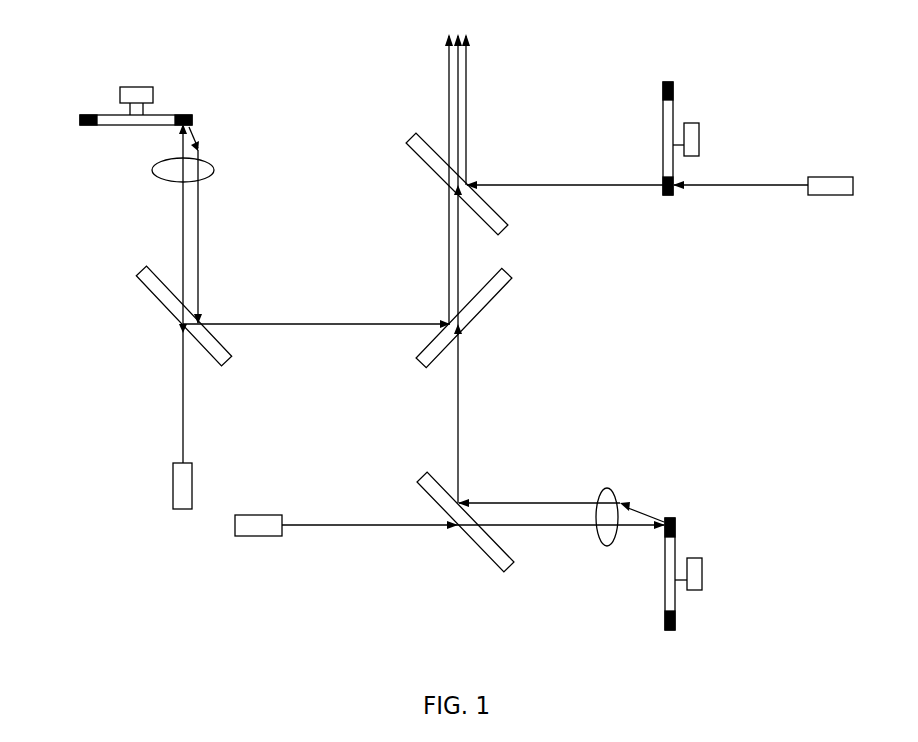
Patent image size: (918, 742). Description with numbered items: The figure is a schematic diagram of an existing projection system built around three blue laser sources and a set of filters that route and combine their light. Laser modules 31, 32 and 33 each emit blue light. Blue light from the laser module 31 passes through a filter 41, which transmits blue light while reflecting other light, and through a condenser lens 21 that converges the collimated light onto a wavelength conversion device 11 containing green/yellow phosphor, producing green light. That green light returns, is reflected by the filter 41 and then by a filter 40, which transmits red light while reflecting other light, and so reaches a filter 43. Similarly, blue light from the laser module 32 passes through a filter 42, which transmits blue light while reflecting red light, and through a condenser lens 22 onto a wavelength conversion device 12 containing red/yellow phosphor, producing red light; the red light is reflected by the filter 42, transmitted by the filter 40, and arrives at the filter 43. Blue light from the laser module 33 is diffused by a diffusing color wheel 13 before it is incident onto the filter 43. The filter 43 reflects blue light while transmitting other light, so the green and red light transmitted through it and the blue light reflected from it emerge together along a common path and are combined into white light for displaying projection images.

The wavelength conversion device 11 is at (90, 124).
The wavelength conversion device 12 is at (665, 628).
The diffusing color wheel 13 is at (672, 82).
The condenser lens 21 is at (160, 173).
The condenser lens 22 is at (612, 540).
The laser module 31 is at (178, 482).
The laser module 32 is at (252, 527).
The laser module 33 is at (822, 177).
The filter 40 is at (502, 282).
The filter 41 is at (150, 285).
The filter 42 is at (495, 550).
The filter 43 is at (418, 142).